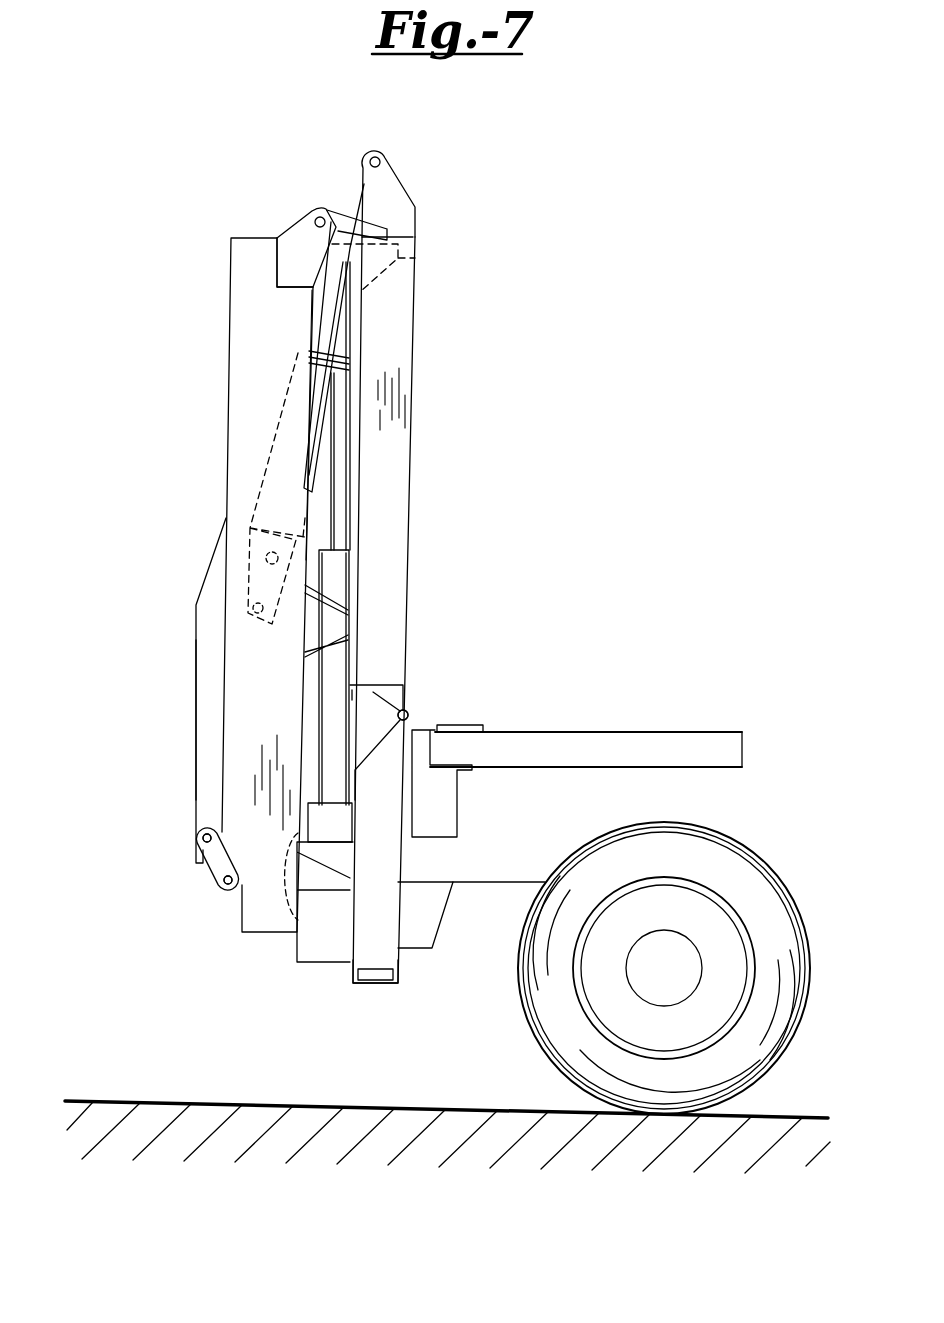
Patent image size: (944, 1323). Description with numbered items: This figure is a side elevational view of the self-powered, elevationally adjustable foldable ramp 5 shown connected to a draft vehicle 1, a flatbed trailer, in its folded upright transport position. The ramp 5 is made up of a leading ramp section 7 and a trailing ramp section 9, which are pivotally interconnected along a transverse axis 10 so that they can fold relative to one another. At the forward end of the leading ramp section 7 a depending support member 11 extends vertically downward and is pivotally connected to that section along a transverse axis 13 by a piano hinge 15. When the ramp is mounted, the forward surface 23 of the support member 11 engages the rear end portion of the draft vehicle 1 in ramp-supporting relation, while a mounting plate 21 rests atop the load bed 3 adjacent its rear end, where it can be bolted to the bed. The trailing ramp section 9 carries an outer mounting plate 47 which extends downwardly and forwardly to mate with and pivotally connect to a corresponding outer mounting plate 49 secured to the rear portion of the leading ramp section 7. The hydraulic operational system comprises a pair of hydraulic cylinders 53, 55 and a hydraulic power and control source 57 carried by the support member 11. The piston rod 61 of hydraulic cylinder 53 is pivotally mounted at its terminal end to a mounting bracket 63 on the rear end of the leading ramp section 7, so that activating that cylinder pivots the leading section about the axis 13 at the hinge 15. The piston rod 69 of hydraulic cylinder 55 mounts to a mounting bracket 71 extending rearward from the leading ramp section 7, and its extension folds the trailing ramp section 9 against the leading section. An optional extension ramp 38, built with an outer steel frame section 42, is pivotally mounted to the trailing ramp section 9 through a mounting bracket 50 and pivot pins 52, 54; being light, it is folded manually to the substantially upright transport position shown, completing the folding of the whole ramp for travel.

The draft vehicle 1 is at (652, 728).
The load bed 3 is at (556, 734).
The foldable ramp 5 is at (487, 398).
The leading ramp section 7 is at (416, 370).
The trailing ramp section 9 is at (225, 372).
The transverse axis 10 is at (317, 217).
The support member 11 is at (367, 940).
The transverse axis 13 is at (411, 706).
The piano hinge 15 is at (410, 718).
The mounting plate 21 is at (470, 727).
The forward surface 23 is at (400, 912).
The extension ramp 38 is at (193, 720).
The outer steel frame section 42 is at (195, 641).
The outer mounting plate 47 is at (277, 237).
The outer mounting plate 49 is at (352, 231).
The mounting bracket 50 is at (196, 850).
The pivot pin 52 is at (225, 886).
The hydraulic cylinder 53 is at (352, 583).
The pivot pin 54 is at (198, 842).
The hydraulic cylinder 55 is at (278, 455).
The hydraulic power and control source 57 is at (295, 943).
The piston rod 61 is at (346, 516).
The mounting bracket 63 is at (417, 261).
The piston rod 69 is at (328, 312).
The mounting bracket 71 is at (405, 200).